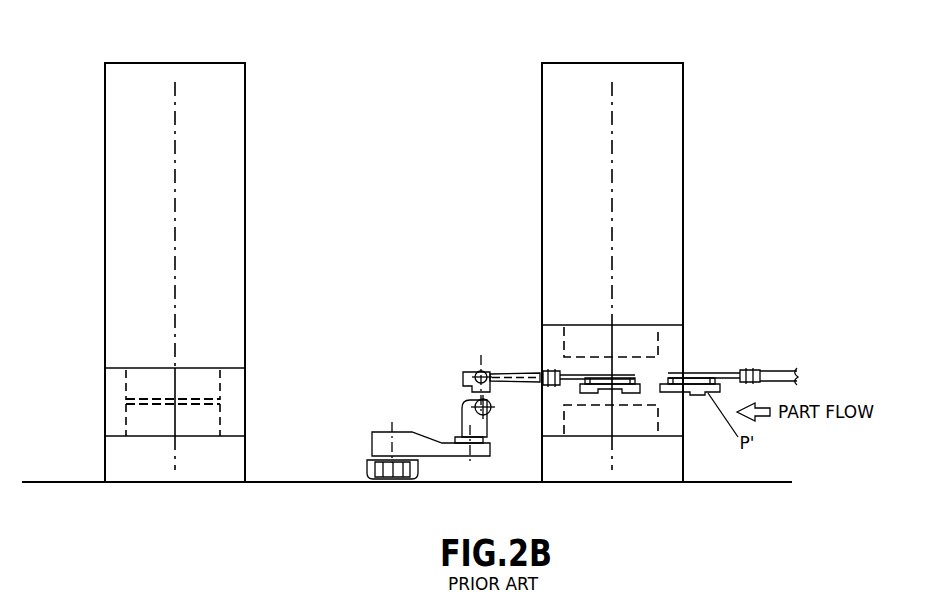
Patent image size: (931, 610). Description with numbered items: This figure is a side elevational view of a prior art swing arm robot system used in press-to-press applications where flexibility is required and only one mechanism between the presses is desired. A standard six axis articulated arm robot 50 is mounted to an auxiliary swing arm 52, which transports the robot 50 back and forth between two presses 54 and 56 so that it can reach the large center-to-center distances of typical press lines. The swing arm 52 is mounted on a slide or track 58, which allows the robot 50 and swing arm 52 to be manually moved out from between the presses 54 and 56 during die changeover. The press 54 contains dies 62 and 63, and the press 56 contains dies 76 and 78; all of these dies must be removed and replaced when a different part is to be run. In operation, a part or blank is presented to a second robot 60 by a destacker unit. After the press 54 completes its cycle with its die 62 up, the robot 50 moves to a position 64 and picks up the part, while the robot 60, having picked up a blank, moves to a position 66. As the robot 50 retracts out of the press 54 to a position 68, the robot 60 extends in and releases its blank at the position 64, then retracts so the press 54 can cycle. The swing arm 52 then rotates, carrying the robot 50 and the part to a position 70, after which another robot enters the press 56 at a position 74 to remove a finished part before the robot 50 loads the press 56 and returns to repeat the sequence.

The six axis robot 50 is at (470, 408).
The swing arm 52 is at (381, 435).
The press 54 is at (663, 63).
The press 56 is at (222, 63).
The slide or track 58 is at (373, 481).
The robot 60 is at (775, 372).
The die 62 is at (620, 340).
The die 63 is at (598, 425).
The position 64 is at (615, 397).
The position 66 is at (690, 400).
The position 68 is at (505, 365).
The position 70 is at (287, 368).
The position 74 is at (166, 410).
The die 76 is at (181, 383).
The die 78 is at (181, 423).